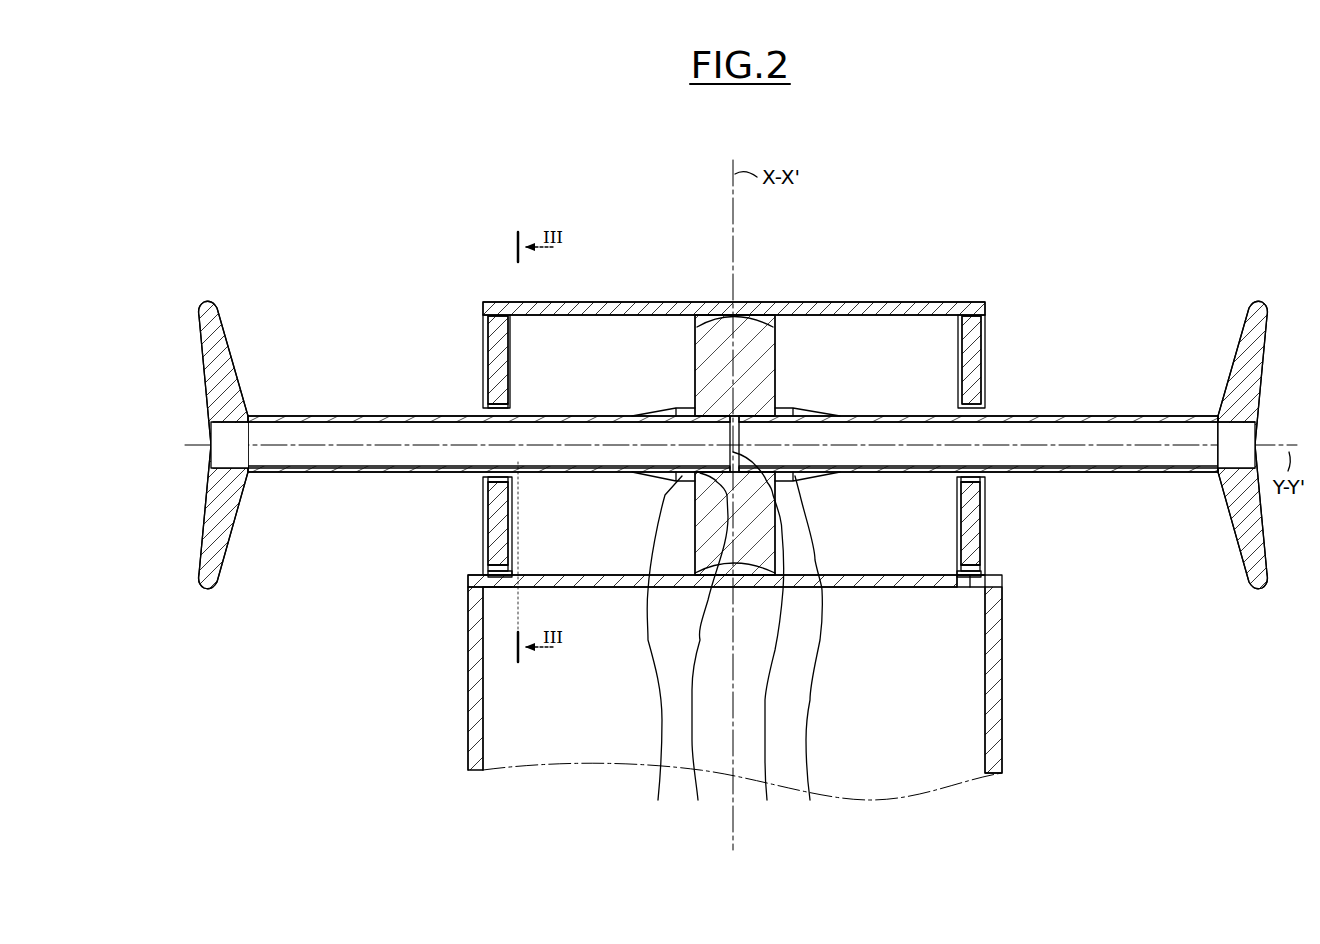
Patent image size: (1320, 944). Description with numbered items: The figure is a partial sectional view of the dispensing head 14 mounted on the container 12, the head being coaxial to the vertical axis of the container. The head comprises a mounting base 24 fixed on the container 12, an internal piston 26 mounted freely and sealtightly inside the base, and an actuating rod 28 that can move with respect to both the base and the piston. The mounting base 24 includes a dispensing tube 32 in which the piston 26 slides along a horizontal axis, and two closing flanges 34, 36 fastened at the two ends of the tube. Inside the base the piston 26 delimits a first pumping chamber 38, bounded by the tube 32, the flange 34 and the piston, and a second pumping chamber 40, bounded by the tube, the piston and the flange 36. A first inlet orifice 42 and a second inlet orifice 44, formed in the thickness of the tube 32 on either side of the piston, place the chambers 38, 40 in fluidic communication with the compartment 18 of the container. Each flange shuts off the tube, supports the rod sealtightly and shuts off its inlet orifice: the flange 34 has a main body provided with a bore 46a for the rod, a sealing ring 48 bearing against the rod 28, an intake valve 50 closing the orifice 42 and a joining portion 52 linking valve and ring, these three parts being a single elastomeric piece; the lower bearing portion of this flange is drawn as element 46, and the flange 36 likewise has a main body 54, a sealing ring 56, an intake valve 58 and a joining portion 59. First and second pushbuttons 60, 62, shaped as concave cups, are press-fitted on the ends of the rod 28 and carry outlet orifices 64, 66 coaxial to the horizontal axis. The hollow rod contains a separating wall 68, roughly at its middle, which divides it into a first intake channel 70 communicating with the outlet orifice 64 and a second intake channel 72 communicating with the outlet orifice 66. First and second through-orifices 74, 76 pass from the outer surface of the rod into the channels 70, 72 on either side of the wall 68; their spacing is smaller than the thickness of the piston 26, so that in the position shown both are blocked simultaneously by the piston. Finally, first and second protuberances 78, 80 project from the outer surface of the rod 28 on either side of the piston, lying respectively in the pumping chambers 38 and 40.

The container 12 is at (470, 660).
The dispensing head 14 is at (1019, 240).
The compartment 18 is at (589, 714).
The mounting base 24 is at (734, 324).
The internal piston 26 is at (728, 355).
The actuating rod 28 is at (378, 415).
The dispensing tube 32 is at (616, 302).
The closing flange 34 is at (488, 337).
The closing flange 36 is at (981, 337).
The first pumping chamber 38 is at (592, 537).
The second pumping chamber 40 is at (853, 537).
The first inlet orifice 42 is at (484, 586).
The second inlet orifice 44 is at (971, 586).
The lower left bearing 46 is at (496, 509).
The bore 46a is at (485, 406).
The sealing ring 48 is at (489, 481).
The intake valve 50 is at (484, 575).
The joining portion 52 is at (503, 520).
The main body 54 is at (975, 521).
The sealing ring 56 is at (984, 481).
The intake valve 58 is at (982, 571).
The joining portion 59 is at (961, 538).
The first pushbutton 60 is at (201, 424).
The second pushbutton 62 is at (1265, 424).
The outlet orifice 64 is at (213, 421).
The outlet orifice 66 is at (1256, 423).
The separating wall 68 is at (758, 648).
The first intake channel 70 is at (330, 462).
The second intake channel 72 is at (1138, 462).
The first through-orifice 74 is at (706, 649).
The second through-orifice 76 is at (762, 417).
The first protuberance 78 is at (663, 650).
The second protuberance 80 is at (809, 659).